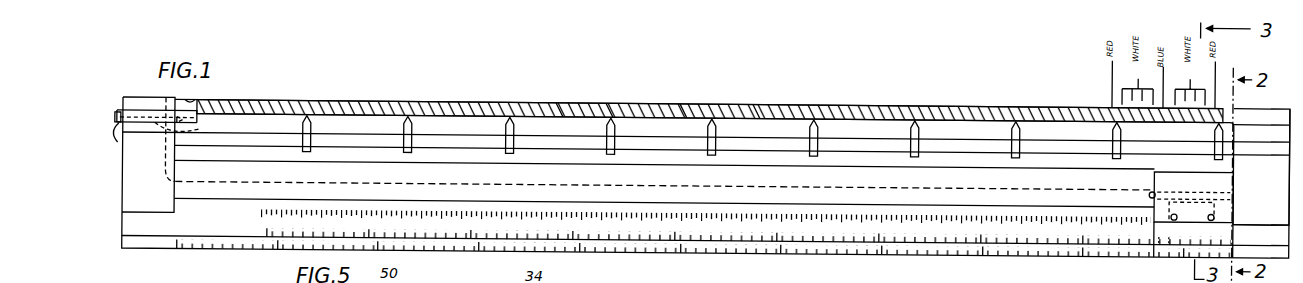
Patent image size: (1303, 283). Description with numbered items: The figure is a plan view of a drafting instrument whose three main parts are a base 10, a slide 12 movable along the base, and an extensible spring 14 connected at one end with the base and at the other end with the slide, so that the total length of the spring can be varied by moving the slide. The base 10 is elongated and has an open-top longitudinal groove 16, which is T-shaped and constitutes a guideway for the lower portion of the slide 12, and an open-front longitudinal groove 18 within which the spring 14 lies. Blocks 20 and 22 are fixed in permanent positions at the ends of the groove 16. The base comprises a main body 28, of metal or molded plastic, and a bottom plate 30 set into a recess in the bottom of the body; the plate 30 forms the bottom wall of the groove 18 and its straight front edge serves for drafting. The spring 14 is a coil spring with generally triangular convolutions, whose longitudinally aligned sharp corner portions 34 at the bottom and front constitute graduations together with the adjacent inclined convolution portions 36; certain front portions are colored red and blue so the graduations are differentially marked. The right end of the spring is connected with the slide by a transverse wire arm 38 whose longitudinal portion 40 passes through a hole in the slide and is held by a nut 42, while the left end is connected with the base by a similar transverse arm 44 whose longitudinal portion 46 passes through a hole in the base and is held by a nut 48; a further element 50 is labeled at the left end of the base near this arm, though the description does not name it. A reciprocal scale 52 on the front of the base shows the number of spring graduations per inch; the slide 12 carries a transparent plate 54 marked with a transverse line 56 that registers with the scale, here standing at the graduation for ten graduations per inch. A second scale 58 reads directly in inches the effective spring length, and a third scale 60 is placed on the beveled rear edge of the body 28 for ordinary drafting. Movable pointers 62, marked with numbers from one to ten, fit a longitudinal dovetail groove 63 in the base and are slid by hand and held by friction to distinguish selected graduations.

The base 10 is at (132, 257).
The slide 12 is at (1155, 163).
The extensible spring 14 is at (897, 105).
The open-top longitudinal groove 16 is at (237, 196).
The open-front longitudinal groove 18 is at (353, 100).
The block 20 is at (132, 208).
The block 22 is at (1243, 217).
The main body 28 is at (150, 100).
The bottom plate 30 is at (1240, 166).
The sharp corner portions 34 is at (558, 100).
The inclined convolution portions 36 is at (610, 114).
The transverse arm 38 is at (1236, 133).
The longitudinal portion 40 is at (1175, 184).
The nut 42 is at (1150, 187).
The transverse arm 44 is at (186, 103).
The longitudinal portion 46 is at (185, 121).
The nut 48 is at (151, 139).
The catch 50 is at (195, 100).
The reciprocal scale 52 is at (960, 210).
The transparent plate 54 is at (1222, 222).
The transverse line 56 is at (1198, 222).
The second longitudinal scale 58 is at (270, 232).
The third scale 60 is at (811, 249).
The movable pointers 62 is at (616, 128).
The longitudinal dovetail groove 63 is at (558, 143).